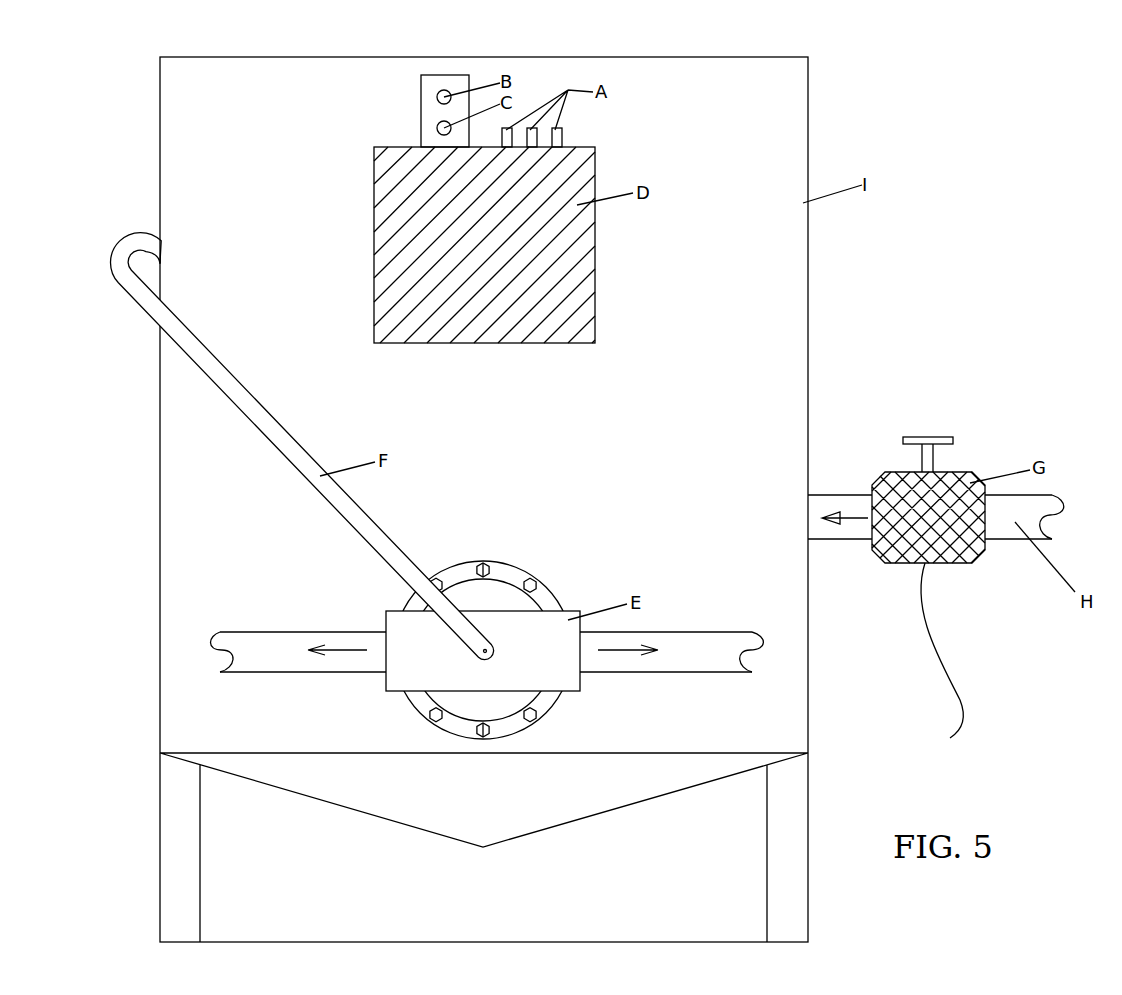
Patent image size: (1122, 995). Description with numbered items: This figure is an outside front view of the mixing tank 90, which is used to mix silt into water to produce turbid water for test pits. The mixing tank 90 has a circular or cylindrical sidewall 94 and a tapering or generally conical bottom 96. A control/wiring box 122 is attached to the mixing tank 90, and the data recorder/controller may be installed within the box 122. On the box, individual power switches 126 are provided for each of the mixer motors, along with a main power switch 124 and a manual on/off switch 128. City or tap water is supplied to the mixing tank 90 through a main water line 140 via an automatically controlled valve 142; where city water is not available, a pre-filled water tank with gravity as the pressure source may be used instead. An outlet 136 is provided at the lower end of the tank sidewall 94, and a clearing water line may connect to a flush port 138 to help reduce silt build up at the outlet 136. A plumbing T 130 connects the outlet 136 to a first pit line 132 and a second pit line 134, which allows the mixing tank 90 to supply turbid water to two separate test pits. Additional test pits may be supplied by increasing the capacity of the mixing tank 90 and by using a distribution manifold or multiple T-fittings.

The mixing tank 90 is at (546, 499).
The sidewall 94 is at (753, 345).
The bottom 96 is at (413, 828).
The control/wiring box 122 is at (550, 335).
The main power switch 124 is at (444, 97).
The individual power switches 126 is at (560, 130).
The manual on/off switch 128 is at (444, 128).
The plumbing T 130 is at (500, 635).
The first pit line 132 is at (247, 658).
The second pit line 134 is at (713, 655).
The outlet 136 is at (555, 590).
The flush port 138 is at (383, 542).
The main water line 140 is at (1007, 530).
The automatically controlled valve 142 is at (950, 485).